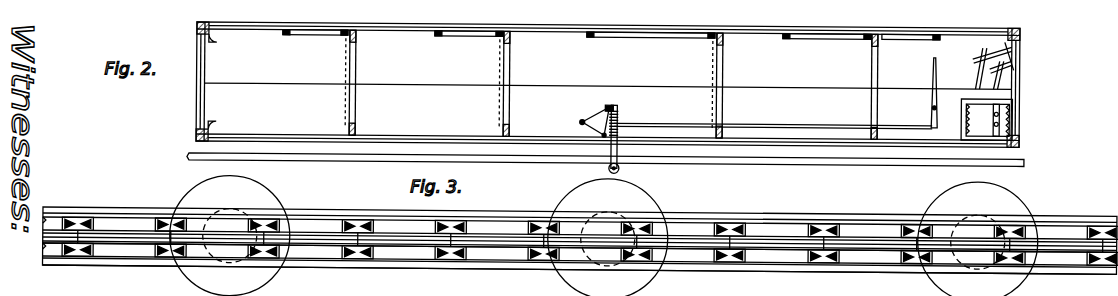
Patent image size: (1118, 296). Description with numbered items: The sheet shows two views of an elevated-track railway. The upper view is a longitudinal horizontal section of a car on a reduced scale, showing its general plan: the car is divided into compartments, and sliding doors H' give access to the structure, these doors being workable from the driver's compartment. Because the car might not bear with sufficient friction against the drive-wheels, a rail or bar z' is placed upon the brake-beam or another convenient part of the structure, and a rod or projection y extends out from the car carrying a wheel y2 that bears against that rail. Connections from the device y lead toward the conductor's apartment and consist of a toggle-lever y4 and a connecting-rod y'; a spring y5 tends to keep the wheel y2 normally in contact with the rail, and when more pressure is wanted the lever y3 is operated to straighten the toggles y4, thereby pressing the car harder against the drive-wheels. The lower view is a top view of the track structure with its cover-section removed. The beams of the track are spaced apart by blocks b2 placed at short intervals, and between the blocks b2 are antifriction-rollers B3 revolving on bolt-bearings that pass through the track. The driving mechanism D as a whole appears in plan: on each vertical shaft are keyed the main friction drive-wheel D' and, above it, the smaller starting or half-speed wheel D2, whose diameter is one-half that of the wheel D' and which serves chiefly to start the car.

In FIG. 2, the sliding doors H' is at (631, 84).
In FIG. 2, the rod or projection y is at (621, 131).
In FIG. 2, the connecting-rod y' is at (773, 114).
In FIG. 2, the wheel y2 is at (620, 168).
In FIG. 2, the lever y3 is at (932, 70).
In FIG. 2, the toggle-lever y4 is at (597, 112).
In FIG. 2, the spring y5 is at (619, 130).
In FIG. 2, the rail or bar z' is at (605, 167).
In FIG. 3, the antifriction-rollers B3 is at (462, 226).
In FIG. 3, the blocks b2 is at (128, 247).
In FIG. 3, the driving mechanism D is at (971, 239).
In FIG. 3, the friction drive-wheel D' is at (610, 237).
In FIG. 3, the starting-wheel D2 is at (608, 207).